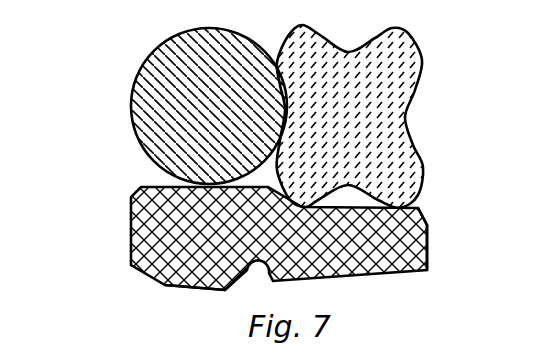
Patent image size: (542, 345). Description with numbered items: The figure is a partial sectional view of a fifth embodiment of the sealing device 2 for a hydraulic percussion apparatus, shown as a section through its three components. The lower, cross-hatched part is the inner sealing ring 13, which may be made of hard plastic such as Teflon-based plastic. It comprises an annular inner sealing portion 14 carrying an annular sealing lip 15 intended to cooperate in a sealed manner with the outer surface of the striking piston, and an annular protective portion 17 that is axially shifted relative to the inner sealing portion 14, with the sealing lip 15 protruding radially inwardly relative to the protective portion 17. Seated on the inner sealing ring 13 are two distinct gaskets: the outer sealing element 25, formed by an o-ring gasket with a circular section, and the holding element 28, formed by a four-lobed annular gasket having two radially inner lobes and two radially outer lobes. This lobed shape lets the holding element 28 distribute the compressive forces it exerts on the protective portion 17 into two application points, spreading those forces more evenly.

The sealing device 2 is at (273, 173).
The outer sealing element 25 is at (166, 70).
The holding element 28 is at (380, 103).
The inner sealing ring 13 is at (260, 247).
The annular inner sealing portion 14 is at (160, 237).
The annular protective portion 17 is at (397, 242).
The annular sealing lip 15 is at (220, 280).